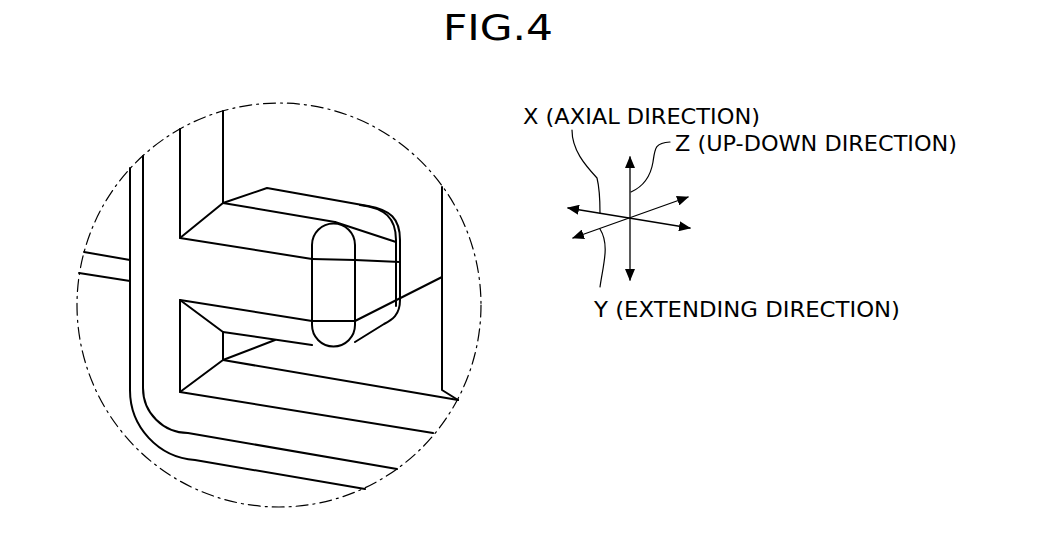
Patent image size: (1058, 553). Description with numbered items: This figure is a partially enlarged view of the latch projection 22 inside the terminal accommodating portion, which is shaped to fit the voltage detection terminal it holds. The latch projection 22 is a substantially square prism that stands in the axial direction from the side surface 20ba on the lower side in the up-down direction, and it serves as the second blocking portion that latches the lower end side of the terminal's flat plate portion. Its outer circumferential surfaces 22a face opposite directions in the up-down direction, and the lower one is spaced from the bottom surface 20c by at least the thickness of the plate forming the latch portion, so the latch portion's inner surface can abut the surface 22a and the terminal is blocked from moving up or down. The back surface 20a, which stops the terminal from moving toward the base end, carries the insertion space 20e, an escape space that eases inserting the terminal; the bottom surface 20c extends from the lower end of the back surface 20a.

The side surface 20ba is at (267, 156).
The latch projection 22 is at (260, 283).
The outer circumferential surface 22a is at (318, 207).
The insertion space 20e is at (403, 187).
The back surface 20a is at (457, 282).
The bottom surface 20c is at (397, 363).